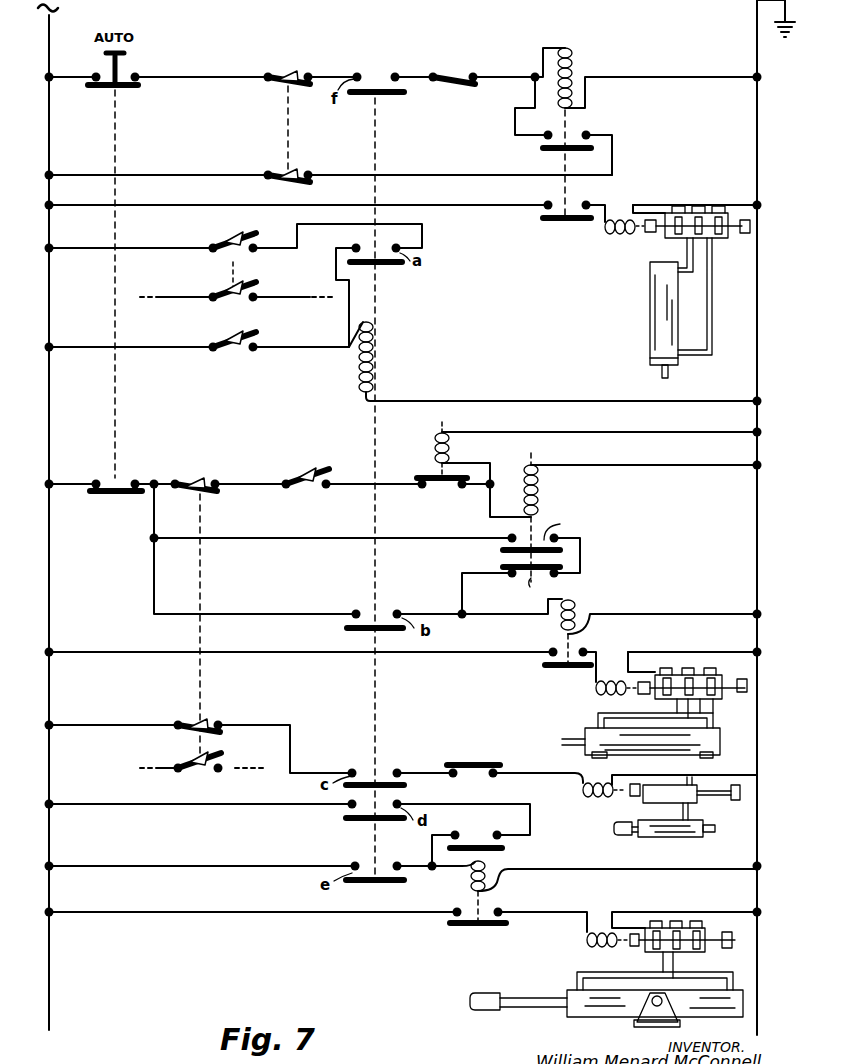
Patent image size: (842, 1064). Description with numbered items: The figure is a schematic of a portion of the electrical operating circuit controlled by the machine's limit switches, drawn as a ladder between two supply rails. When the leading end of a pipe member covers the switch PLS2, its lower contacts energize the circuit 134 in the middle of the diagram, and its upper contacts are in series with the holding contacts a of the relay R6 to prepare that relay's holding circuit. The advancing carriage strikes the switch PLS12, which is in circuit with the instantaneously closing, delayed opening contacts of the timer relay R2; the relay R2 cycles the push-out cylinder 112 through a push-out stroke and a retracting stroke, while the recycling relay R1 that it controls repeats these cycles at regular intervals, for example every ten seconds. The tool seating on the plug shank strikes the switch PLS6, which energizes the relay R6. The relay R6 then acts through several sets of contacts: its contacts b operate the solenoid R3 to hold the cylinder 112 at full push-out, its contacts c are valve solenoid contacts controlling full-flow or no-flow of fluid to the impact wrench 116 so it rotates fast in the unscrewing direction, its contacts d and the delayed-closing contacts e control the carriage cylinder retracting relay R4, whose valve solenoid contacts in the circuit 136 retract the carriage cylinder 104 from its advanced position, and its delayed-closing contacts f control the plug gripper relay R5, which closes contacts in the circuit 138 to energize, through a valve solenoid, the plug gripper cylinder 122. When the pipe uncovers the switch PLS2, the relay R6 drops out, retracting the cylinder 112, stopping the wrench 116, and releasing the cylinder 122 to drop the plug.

The carriage cylinder 104 is at (573, 990).
The push-out cylinder 112 is at (585, 728).
The impact wrench 116 is at (668, 840).
The plug gripper cylinder 122 is at (650, 312).
The circuit 134 is at (192, 300).
The circuit 136 is at (518, 912).
The circuit 138 is at (600, 205).
The timer relay R1 is at (544, 493).
The timer relay R2 is at (436, 444).
The solenoid R3 is at (578, 604).
The carriage cylinder retracting relay R4 is at (487, 862).
The plug gripper relay R5 is at (578, 66).
The relay R6 is at (383, 351).
The switch PLS2 is at (232, 262).
The switch PLS6 is at (243, 352).
The switch PLS12 is at (318, 459).